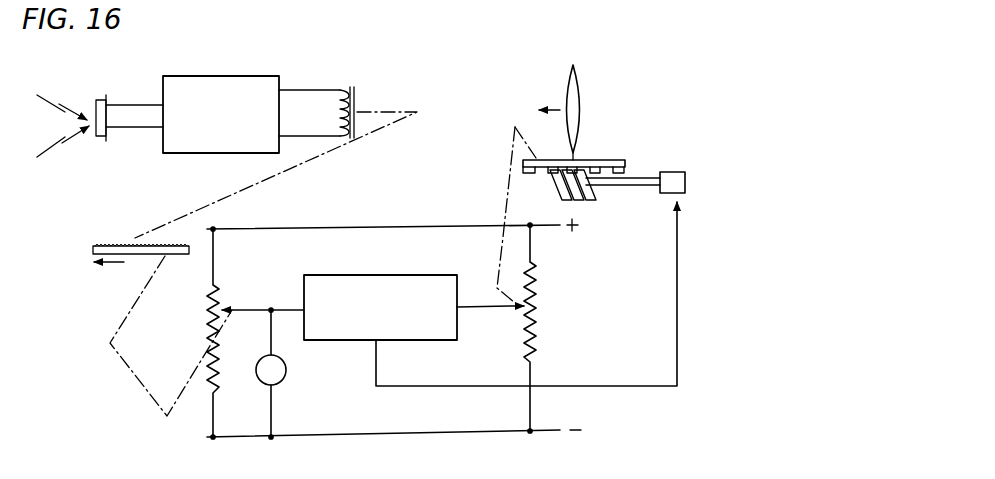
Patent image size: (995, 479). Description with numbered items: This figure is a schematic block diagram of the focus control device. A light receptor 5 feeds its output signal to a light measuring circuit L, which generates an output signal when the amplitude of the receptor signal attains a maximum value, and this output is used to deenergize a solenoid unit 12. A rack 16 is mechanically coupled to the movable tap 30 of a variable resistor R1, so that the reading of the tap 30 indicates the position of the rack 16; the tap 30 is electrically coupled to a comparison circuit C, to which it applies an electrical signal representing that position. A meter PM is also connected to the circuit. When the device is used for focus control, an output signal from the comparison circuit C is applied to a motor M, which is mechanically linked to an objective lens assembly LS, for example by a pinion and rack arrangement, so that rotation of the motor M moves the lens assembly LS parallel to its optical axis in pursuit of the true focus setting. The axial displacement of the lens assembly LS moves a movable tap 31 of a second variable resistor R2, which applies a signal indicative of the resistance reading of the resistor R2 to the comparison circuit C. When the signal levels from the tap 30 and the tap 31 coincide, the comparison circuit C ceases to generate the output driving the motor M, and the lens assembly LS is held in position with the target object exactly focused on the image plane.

The light receptor 5 is at (97, 139).
The light measuring circuit L is at (173, 153).
The solenoid unit 12 is at (357, 90).
The rack 16 is at (93, 248).
The movable tap 30 is at (226, 308).
The variable resistor R1 is at (210, 306).
The meter PM is at (283, 378).
The comparison circuit C is at (343, 340).
The movable tap 31 is at (518, 312).
The variable resistor R2 is at (545, 321).
The objective lens assembly LS is at (578, 95).
The motor M is at (680, 176).